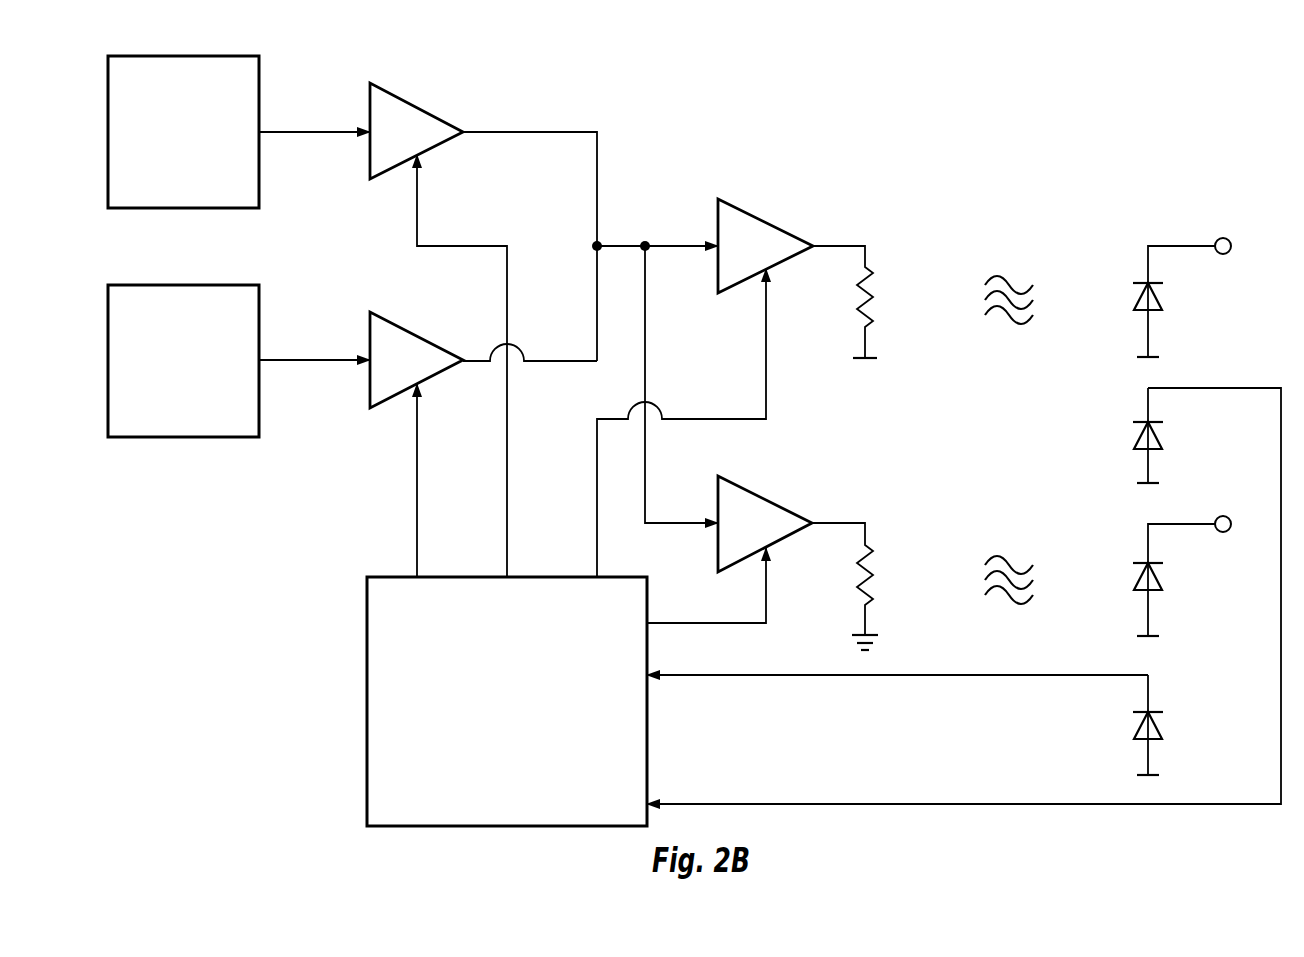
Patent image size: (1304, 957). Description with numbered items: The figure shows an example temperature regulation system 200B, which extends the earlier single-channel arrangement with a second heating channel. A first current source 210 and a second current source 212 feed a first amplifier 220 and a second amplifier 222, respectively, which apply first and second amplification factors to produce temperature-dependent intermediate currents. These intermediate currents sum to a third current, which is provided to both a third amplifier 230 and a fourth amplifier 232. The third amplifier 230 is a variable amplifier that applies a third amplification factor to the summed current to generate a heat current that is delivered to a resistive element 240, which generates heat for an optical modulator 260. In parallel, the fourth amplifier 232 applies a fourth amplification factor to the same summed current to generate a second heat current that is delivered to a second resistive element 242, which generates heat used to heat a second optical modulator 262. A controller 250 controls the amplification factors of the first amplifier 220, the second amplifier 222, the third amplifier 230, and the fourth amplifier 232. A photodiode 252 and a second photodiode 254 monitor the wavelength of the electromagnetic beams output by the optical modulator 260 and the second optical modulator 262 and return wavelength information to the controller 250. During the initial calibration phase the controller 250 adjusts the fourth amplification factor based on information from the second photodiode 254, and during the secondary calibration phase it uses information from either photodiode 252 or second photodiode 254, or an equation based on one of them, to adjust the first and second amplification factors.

The temperature regulation system 200B is at (1150, 138).
The first current source 210 is at (167, 168).
The second current source 212 is at (167, 397).
The first amplifier 220 is at (417, 143).
The second amplifier 222 is at (417, 372).
The third amplifier 230 is at (766, 258).
The fourth amplifier 232 is at (766, 537).
The resistive element 240 is at (862, 300).
The second resistive element 242 is at (862, 578).
The controller 250 is at (491, 728).
The photodiode 252 is at (1156, 437).
The second photodiode 254 is at (1156, 727).
The optical modulator 260 is at (1156, 298).
The second optical modulator 262 is at (1156, 578).